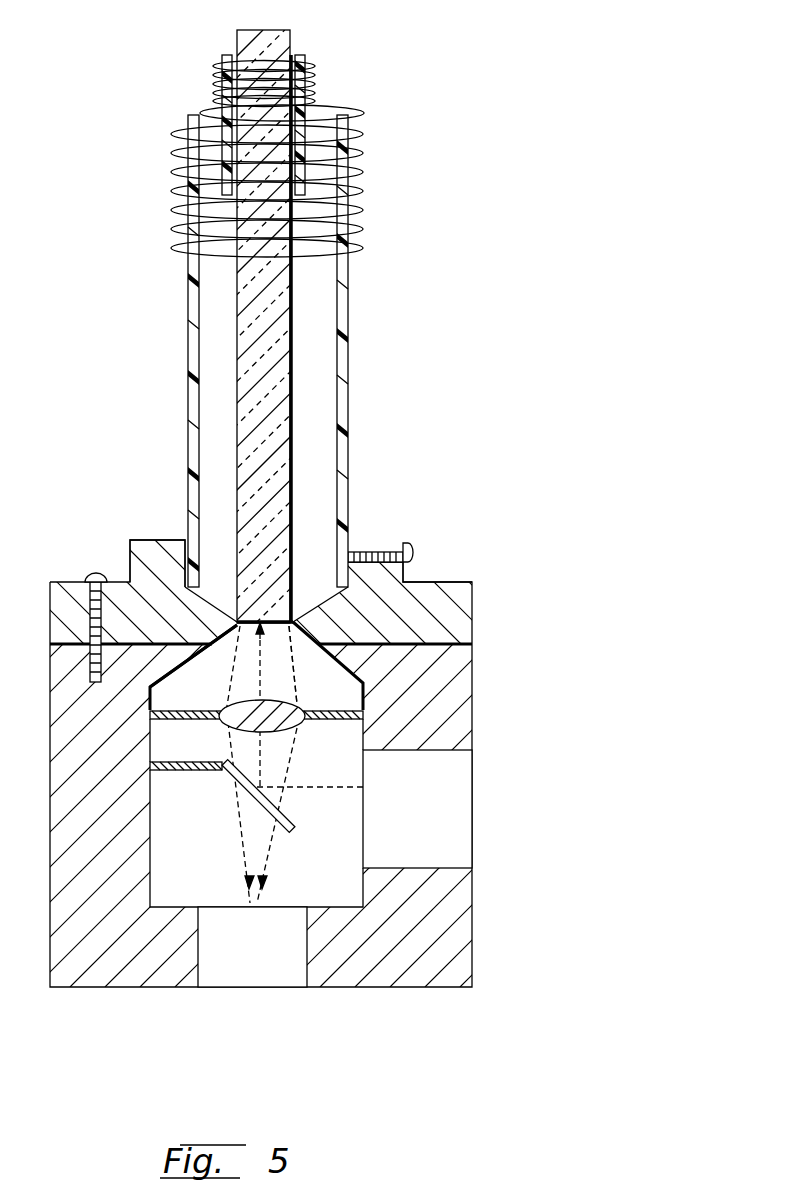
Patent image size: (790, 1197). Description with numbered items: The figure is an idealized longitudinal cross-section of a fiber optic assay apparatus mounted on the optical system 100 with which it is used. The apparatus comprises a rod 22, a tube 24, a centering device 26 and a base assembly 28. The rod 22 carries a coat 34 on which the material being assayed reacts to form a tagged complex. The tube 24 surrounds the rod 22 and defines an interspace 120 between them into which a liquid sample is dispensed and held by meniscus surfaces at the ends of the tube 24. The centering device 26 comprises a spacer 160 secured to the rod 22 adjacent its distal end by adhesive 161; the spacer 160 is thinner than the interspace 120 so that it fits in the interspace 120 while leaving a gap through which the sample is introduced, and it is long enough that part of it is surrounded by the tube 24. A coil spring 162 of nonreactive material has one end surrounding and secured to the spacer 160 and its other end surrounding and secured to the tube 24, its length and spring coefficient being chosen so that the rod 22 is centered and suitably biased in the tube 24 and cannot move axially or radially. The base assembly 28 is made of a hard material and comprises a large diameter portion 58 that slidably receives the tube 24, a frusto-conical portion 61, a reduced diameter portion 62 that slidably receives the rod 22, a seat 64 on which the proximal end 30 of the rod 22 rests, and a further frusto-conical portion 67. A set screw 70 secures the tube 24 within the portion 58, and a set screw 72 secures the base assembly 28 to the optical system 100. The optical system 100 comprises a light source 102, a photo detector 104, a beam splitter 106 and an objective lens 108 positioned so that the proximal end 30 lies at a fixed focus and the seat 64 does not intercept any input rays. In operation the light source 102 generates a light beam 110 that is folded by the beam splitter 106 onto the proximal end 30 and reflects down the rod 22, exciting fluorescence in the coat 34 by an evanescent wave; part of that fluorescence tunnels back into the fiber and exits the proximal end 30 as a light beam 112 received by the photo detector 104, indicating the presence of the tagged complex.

The rod 22 is at (282, 400).
The tube 24 is at (343, 363).
The centering device 26 is at (352, 40).
The base assembly 28 is at (150, 528).
The proximal end 30 is at (284, 629).
The coat 34 is at (293, 337).
The large diameter portion 58 is at (333, 545).
The frusto-conical portion 61 is at (333, 597).
The reduced diameter portion 62 is at (298, 618).
The seat 64 is at (232, 613).
The frusto-conical portion 67 is at (192, 657).
The set screw 70 is at (412, 548).
The set screw 72 is at (95, 571).
The optical system 100 is at (475, 677).
The light source 102 is at (472, 760).
The photo detector 104 is at (297, 980).
The beam splitter 106 is at (240, 783).
The objective lens 108 is at (233, 709).
The light beam 110 is at (340, 787).
The light beam 112 is at (296, 684).
The interspace 120 is at (322, 280).
The spacer 160 is at (302, 101).
The adhesive 161 is at (300, 70).
The coil spring 162 is at (358, 162).